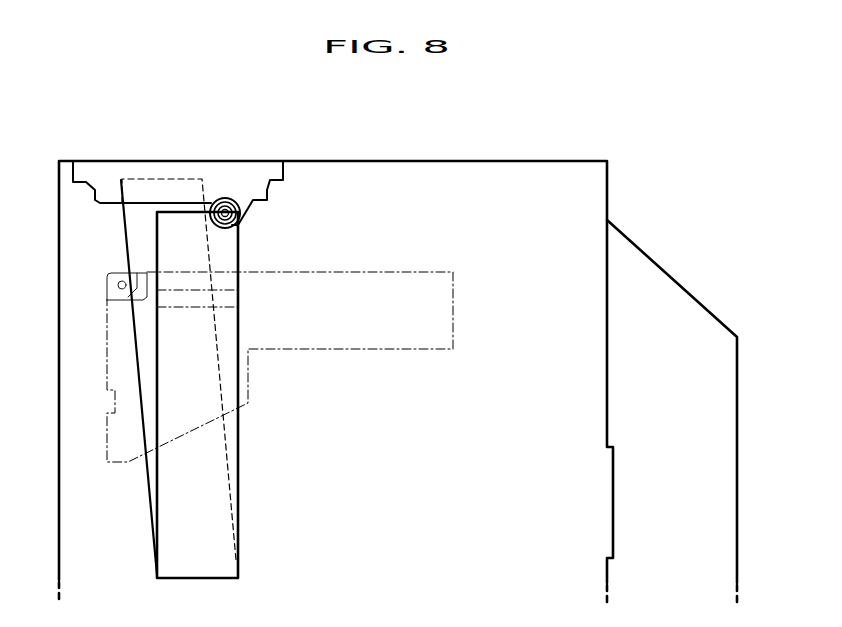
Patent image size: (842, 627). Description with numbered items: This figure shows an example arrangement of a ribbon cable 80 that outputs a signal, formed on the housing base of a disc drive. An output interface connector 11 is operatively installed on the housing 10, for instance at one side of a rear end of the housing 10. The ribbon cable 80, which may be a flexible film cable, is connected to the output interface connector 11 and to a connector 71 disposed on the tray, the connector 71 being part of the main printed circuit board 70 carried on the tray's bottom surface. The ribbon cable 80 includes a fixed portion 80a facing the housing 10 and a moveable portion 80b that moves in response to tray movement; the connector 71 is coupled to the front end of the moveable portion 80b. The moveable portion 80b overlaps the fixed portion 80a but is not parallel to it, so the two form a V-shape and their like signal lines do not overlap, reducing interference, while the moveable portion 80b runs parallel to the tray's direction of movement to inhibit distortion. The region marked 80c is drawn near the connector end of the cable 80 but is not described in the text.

The housing 10 is at (512, 172).
The output interface connector 11 is at (261, 185).
The main printed circuit board 70 is at (411, 271).
The output interface connector 71 is at (242, 297).
The ribbon cable 80 is at (228, 378).
The fixed portion 80a is at (226, 443).
The moveable portion 80b is at (238, 475).
The hinge portion 80c is at (178, 220).